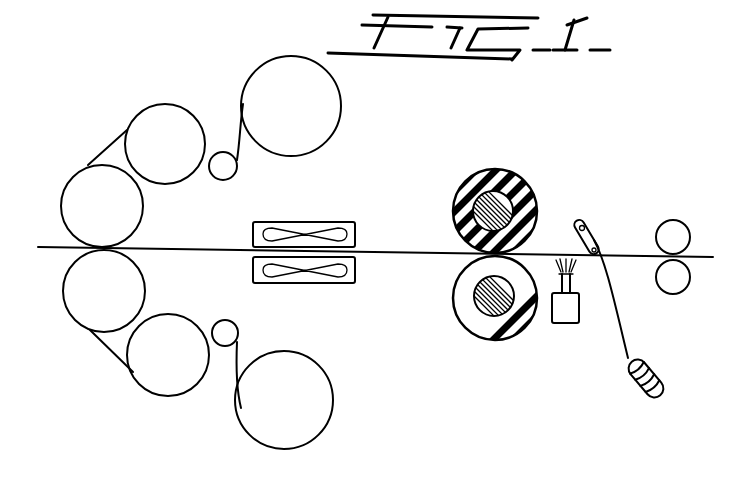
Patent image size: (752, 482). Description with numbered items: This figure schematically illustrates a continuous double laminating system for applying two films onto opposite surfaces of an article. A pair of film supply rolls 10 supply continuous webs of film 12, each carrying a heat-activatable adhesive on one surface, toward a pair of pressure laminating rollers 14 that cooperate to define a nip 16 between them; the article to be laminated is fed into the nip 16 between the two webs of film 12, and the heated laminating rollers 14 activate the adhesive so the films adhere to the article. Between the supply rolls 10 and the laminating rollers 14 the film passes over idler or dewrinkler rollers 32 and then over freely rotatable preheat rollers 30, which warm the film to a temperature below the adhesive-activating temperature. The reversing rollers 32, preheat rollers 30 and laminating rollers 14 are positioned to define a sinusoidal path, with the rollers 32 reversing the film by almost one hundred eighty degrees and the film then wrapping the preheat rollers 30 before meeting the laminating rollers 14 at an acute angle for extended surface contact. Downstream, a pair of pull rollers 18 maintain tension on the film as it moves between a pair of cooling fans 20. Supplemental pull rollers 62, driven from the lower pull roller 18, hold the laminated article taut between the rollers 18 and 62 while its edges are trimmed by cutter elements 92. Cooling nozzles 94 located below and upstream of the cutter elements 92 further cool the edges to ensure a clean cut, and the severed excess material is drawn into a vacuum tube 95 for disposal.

The film supply rolls 10 is at (325, 107).
The webs of film 12 is at (238, 152).
The pressure laminating rollers 14 is at (93, 193).
The nip 16 is at (66, 240).
The pull rollers 18 is at (490, 174).
The cooling fans 20 is at (328, 222).
The preheat rollers 30 is at (158, 125).
The idler or dewrinkler rollers 32 is at (223, 327).
The supplemental pull rollers 62 is at (667, 233).
The cutter elements 92 is at (590, 224).
The cooling nozzles 94 is at (566, 323).
The vacuum tube 95 is at (641, 400).